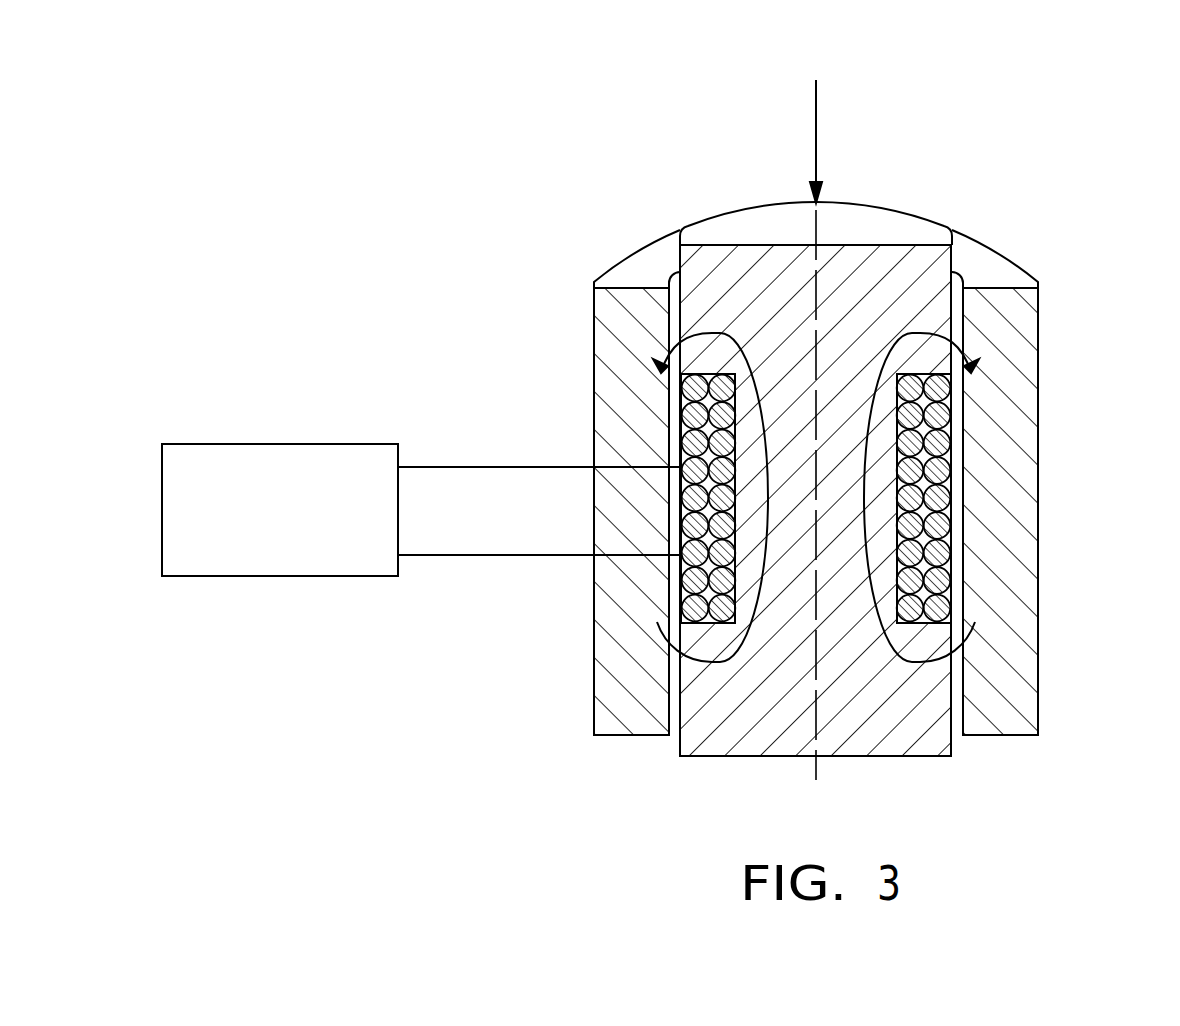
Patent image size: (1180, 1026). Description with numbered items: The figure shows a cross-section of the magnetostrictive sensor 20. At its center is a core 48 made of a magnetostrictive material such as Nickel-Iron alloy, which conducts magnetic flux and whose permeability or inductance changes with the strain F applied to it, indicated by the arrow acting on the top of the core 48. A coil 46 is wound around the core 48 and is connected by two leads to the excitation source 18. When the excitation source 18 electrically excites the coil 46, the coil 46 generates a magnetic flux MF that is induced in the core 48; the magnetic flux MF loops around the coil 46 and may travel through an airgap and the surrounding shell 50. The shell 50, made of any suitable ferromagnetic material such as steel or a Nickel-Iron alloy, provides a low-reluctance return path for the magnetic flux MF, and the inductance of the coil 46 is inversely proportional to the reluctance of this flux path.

The excitation source 18 is at (205, 444).
The magnetostrictive sensor 20 is at (874, 399).
The coil 46 is at (945, 452).
The core 48 is at (913, 255).
The shell 50 is at (1025, 358).
The magnetic flux MF is at (975, 623).
The strain F is at (814, 103).